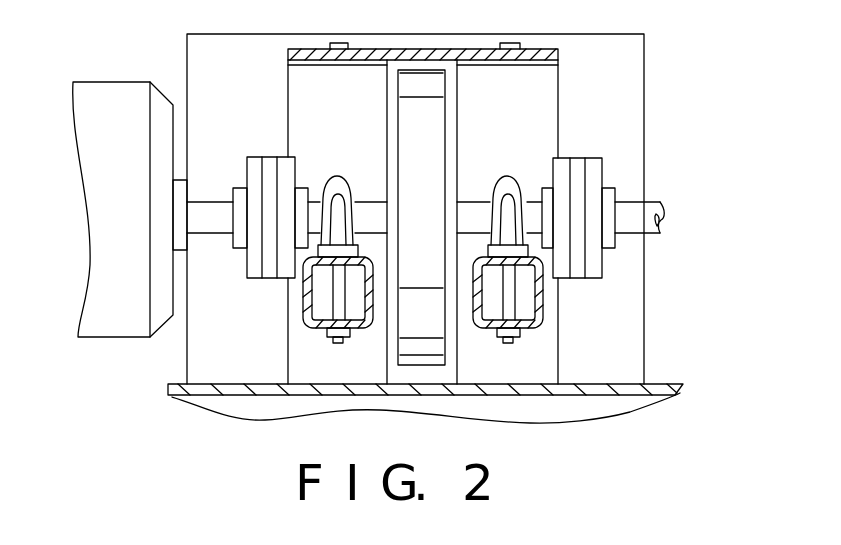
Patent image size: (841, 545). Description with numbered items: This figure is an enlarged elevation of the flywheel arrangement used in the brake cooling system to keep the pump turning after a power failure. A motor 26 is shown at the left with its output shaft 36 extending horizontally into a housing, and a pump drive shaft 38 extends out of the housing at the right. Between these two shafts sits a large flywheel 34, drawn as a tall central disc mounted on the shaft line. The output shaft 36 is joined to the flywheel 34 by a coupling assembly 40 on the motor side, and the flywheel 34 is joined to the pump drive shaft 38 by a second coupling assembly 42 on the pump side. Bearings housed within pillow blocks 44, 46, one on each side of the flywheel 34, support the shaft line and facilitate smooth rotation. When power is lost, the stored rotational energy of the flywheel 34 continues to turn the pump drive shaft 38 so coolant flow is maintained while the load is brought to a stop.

The motor 26 is at (106, 82).
The flywheel 34 is at (450, 140).
The output shaft 36 is at (215, 197).
The pump drive shaft 38 is at (655, 200).
The coupling assembly 40 is at (257, 279).
The coupling assembly 42 is at (576, 279).
The pillow block 44 is at (335, 176).
The pillow block 46 is at (521, 178).